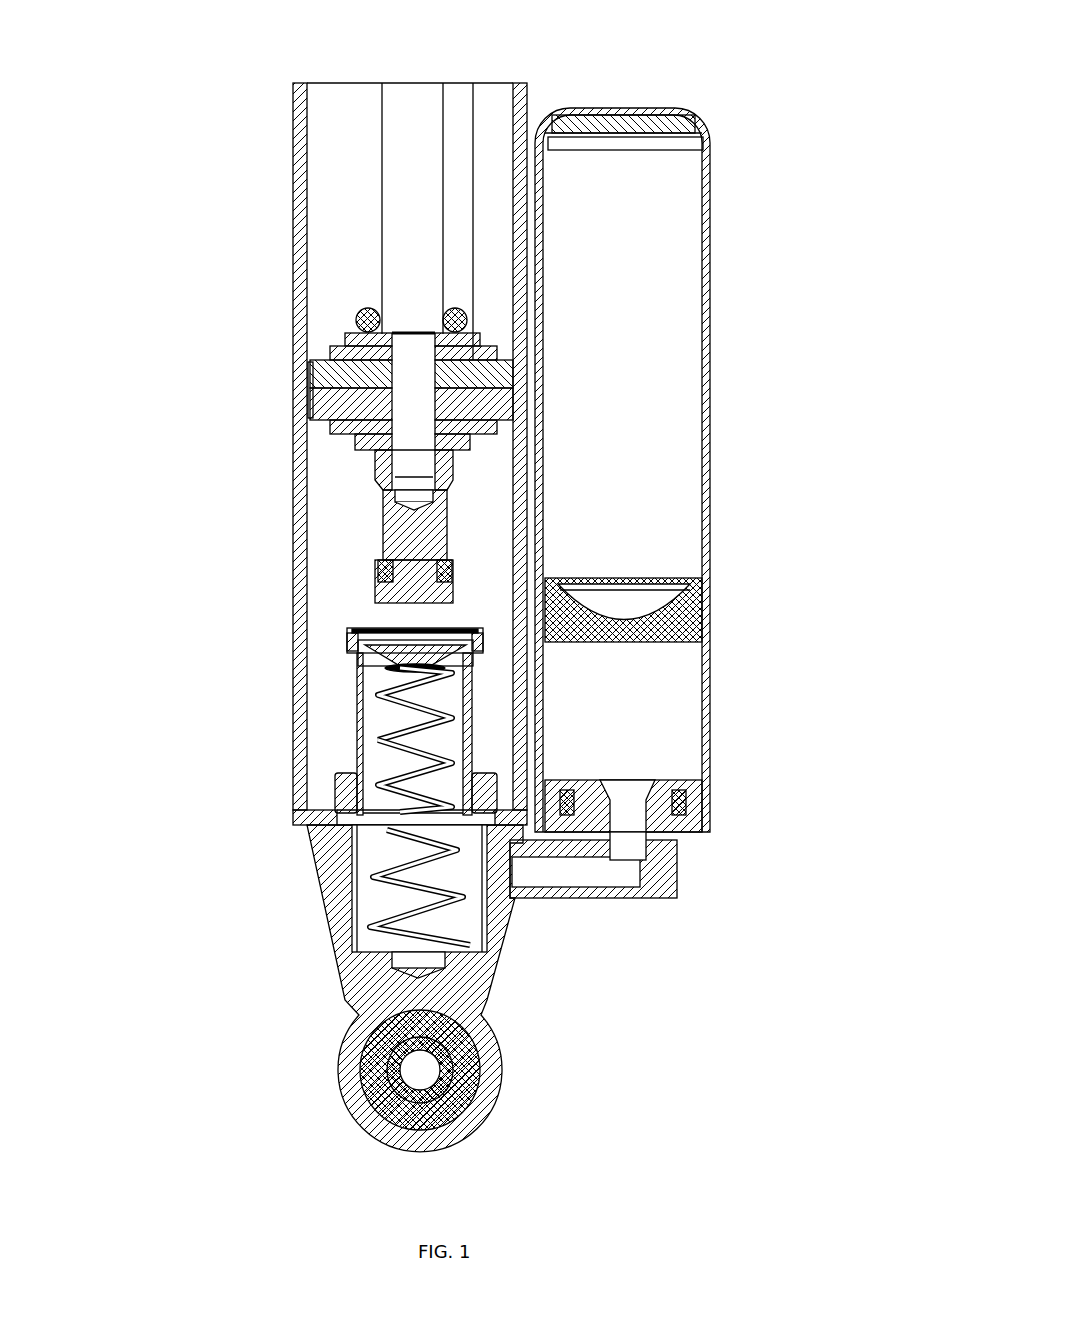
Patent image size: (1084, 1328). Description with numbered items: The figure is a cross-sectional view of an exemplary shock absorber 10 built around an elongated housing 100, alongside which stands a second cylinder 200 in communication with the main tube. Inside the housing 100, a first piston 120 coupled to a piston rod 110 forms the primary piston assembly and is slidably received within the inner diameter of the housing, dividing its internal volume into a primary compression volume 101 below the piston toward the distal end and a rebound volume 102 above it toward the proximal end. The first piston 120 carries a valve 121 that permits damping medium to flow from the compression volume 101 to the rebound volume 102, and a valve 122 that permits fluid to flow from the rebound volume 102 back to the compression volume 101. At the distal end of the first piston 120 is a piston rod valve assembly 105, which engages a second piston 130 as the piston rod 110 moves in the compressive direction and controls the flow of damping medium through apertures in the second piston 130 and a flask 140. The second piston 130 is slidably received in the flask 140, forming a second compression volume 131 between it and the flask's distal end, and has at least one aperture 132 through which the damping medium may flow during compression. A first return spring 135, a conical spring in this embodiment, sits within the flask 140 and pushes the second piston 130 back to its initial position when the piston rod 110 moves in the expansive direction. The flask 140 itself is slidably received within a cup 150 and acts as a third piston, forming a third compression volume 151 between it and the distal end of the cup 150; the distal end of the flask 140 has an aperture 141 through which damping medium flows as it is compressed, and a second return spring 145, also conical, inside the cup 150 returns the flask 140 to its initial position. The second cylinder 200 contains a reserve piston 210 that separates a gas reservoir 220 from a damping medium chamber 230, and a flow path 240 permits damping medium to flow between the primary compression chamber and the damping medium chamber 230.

The shock absorber 10 is at (685, 48).
The elongated housing 100 is at (295, 190).
The primary compression volume 101 is at (335, 553).
The rebound volume 102 is at (497, 143).
The piston rod valve assembly 105 is at (375, 580).
The piston rod 110 is at (378, 187).
The first piston 120 is at (300, 395).
The valve 121 is at (473, 300).
The valve 122 is at (296, 378).
The second piston 130 is at (348, 647).
The second compression volume 131 is at (387, 717).
The aperture 132 is at (348, 633).
The first return spring 135 is at (370, 757).
The flask 140 is at (348, 725).
The aperture 141 is at (300, 825).
The second return spring 145 is at (355, 933).
The cup 150 is at (310, 858).
The third compression volume 151 is at (377, 898).
The second cylinder 200 is at (718, 325).
The reserve piston 210 is at (630, 607).
The gas reservoir 220 is at (643, 237).
The damping medium chamber 230 is at (642, 713).
The flow path 240 is at (595, 870).